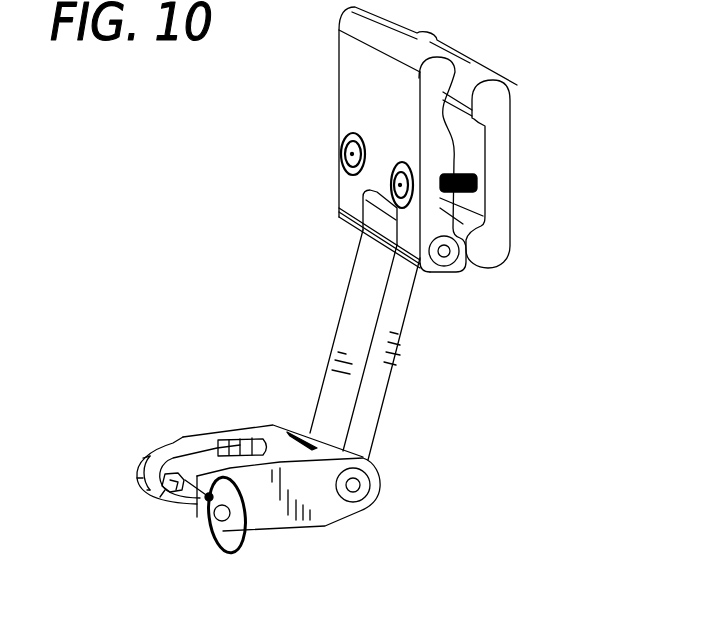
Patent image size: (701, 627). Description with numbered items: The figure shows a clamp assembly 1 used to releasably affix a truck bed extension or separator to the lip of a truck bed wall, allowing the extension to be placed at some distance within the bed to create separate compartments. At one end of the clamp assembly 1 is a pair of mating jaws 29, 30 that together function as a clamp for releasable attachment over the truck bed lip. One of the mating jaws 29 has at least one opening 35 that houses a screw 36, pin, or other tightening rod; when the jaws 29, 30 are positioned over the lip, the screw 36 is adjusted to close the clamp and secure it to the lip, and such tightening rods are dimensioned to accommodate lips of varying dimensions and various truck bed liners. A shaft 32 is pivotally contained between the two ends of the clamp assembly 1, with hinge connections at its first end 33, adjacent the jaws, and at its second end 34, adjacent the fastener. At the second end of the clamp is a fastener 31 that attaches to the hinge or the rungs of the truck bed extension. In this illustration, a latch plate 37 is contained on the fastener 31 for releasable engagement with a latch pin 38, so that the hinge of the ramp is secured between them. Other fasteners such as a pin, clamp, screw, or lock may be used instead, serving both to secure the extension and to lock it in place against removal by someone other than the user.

The stabilizer assembly 1 is at (600, 626).
The mating jaw 29 is at (372, 98).
The mating jaw 30 is at (505, 150).
The fastener 31 is at (350, 507).
The shaft 32 is at (396, 328).
The first end hinge connection 33 is at (372, 221).
The second end hinge connection 34 is at (310, 432).
The opening 35 is at (390, 178).
The screw 36 is at (345, 150).
The latch plate 37 is at (190, 457).
The latch pin 38 is at (205, 495).